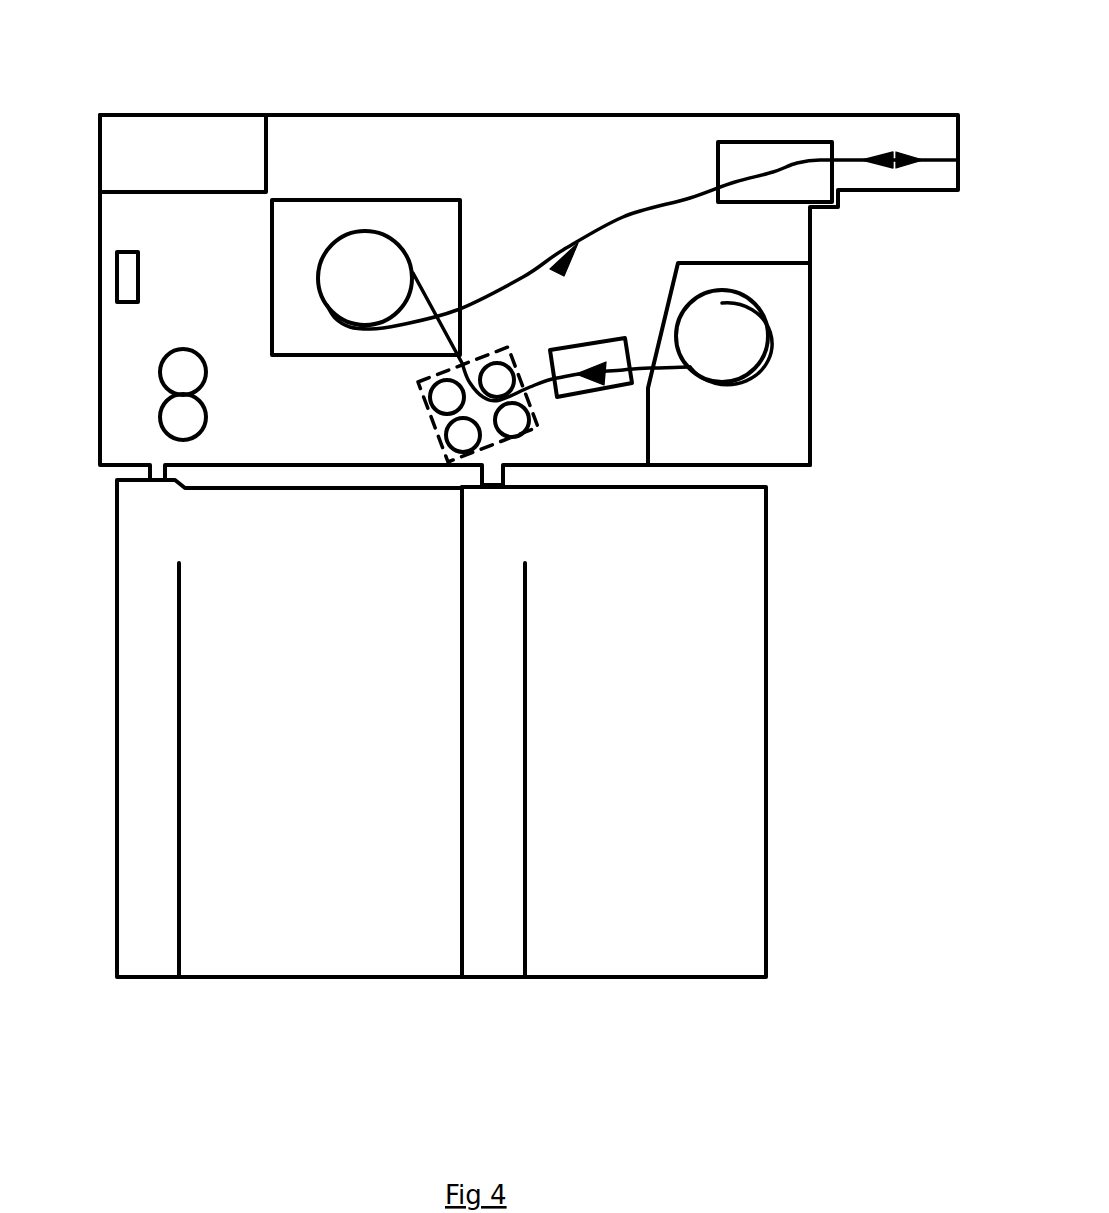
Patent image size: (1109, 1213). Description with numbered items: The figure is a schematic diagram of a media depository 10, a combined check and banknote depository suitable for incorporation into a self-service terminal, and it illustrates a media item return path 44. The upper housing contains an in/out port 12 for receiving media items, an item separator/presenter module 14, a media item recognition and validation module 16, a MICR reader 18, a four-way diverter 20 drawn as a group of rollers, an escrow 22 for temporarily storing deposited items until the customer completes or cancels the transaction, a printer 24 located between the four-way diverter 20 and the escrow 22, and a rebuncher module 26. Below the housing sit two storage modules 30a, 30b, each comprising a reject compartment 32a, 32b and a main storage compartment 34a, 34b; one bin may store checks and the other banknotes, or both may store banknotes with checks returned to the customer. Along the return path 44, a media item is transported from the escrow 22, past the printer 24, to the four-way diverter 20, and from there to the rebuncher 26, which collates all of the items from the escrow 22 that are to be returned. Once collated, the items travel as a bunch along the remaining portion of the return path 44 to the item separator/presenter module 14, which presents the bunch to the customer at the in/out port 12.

The media depository 10 is at (192, 1048).
The in/out port 12 is at (945, 110).
The item separator/presenter module 14 is at (770, 141).
The media item recognition and validation module 16 is at (246, 115).
The MICR reader 18 is at (117, 275).
The four-way diverter 20 is at (422, 418).
The escrow 22 is at (770, 330).
The printer 24 is at (596, 342).
The rebuncher module 26 is at (272, 262).
The storage module 30a is at (252, 728).
The storage module 30b is at (658, 732).
The reject compartment 32a is at (154, 770).
The reject compartment 32b is at (500, 770).
The main storage compartment 34a is at (320, 732).
The main storage compartment 34b is at (645, 732).
The media item return path 44 is at (612, 224).